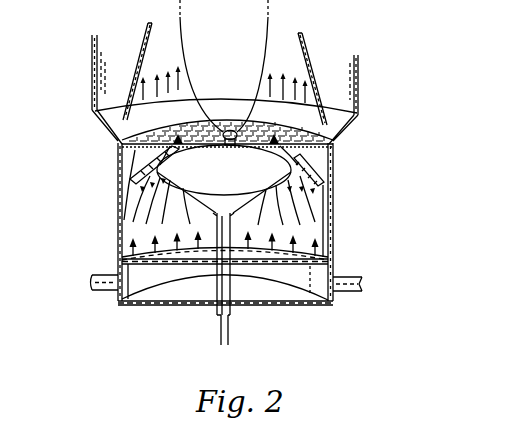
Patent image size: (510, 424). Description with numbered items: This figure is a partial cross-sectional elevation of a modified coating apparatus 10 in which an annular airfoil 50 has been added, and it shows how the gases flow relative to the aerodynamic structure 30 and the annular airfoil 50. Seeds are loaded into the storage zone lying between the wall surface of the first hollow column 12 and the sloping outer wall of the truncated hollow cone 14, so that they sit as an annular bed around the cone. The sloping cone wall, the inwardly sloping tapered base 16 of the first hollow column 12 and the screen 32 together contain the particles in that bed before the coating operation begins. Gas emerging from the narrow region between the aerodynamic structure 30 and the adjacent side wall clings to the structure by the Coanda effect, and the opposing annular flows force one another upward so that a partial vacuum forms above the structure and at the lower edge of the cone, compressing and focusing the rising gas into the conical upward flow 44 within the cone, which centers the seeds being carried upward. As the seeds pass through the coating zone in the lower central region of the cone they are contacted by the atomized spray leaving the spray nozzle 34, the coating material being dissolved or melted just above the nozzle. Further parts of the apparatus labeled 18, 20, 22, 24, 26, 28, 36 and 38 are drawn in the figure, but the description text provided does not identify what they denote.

The coating apparatus 10 is at (68, 67).
The first hollow column 12 is at (83, 98).
The truncated hollow cone 14 is at (302, 36).
The inwardly sloping tapered base 16 is at (103, 128).
The chamber side wall 18 is at (330, 189).
The bottom wall 20 is at (332, 304).
The inlet pipe 22 is at (83, 283).
The outlet pipe 24 is at (370, 285).
The perforated distributor plate 26 is at (326, 255).
The inner liner 28 is at (325, 223).
The aerodynamic structure 30 is at (241, 181).
The screen 32 is at (333, 157).
The spray nozzle 34 is at (226, 130).
The discharge tube 36 is at (218, 337).
The inner discharge tube 38 is at (230, 337).
The conical upward gas flow 44 is at (268, 52).
The annular airfoil 50 is at (320, 171).